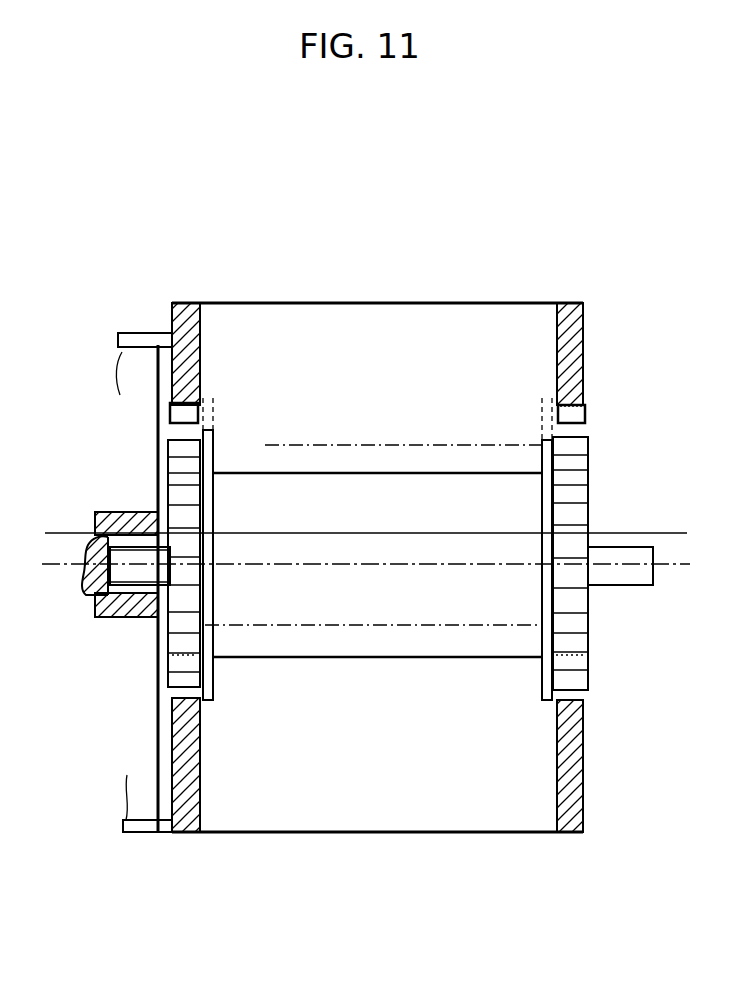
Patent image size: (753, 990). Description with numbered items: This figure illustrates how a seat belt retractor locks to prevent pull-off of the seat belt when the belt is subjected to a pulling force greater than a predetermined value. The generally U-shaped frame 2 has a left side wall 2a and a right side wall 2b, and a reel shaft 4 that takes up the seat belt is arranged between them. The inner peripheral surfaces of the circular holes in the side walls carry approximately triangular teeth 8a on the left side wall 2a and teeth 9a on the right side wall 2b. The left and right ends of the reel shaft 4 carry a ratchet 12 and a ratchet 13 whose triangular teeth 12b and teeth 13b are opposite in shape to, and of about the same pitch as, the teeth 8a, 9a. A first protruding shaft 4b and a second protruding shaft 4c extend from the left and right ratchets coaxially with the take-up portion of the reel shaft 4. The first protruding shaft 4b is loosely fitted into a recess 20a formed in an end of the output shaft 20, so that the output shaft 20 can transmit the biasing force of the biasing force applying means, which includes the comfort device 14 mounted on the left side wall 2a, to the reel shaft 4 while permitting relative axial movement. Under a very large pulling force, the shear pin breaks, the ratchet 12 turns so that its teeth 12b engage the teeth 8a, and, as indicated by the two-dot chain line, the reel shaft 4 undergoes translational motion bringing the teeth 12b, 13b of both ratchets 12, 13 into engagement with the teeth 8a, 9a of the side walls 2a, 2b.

The frame 2 is at (355, 303).
The left side wall 2a is at (198, 333).
The right side wall 2b is at (584, 335).
The reel shaft 4 is at (397, 645).
The first protruding shaft 4b is at (132, 548).
The second protruding shaft 4c is at (630, 548).
The teeth 8a is at (198, 413).
The teeth 9a is at (575, 413).
The ratchet 12 is at (168, 668).
The teeth 12b is at (213, 453).
The ratchet 13 is at (585, 632).
The teeth 13b is at (556, 432).
The comfort device 14 is at (142, 330).
The output shaft 20 is at (86, 591).
The recess 20a is at (100, 540).